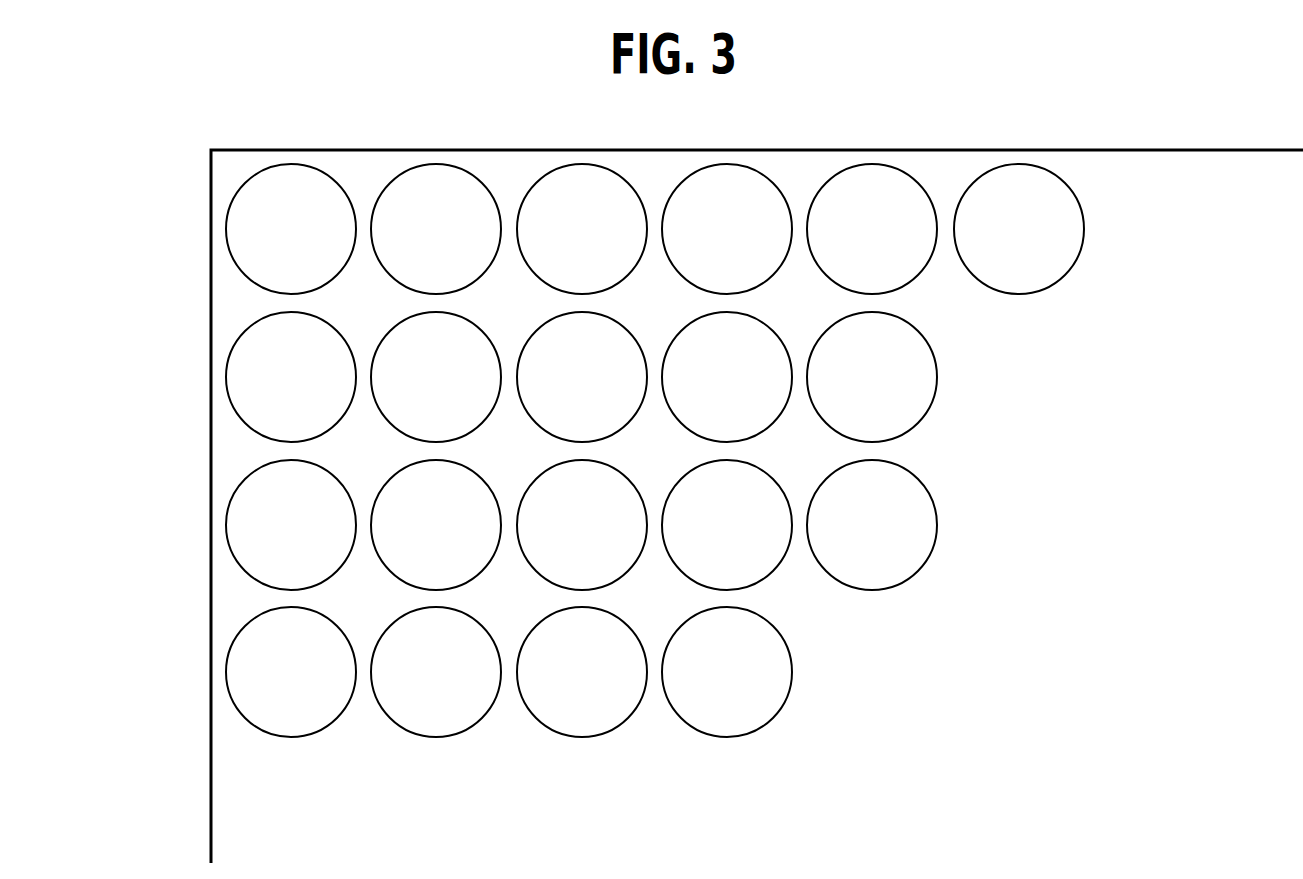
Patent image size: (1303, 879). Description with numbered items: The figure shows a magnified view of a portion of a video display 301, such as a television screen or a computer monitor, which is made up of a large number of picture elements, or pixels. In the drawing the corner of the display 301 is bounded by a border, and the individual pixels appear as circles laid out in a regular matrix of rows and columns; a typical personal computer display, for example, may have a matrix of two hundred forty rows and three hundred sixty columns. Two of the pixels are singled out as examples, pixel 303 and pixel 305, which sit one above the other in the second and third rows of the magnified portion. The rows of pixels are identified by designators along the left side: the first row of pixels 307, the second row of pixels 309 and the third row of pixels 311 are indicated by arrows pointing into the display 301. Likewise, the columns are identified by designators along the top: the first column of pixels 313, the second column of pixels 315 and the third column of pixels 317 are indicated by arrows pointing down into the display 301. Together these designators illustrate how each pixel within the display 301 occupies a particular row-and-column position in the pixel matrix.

The video display 301 is at (1155, 168).
The pixel 303 is at (893, 394).
The pixel 305 is at (893, 542).
The first row of pixels 307 is at (196, 230).
The second row of pixels 309 is at (516, 377).
The third row of pixels 311 is at (516, 525).
The first column of pixels 313 is at (298, 138).
The second column of pixels 315 is at (435, 138).
The third column of pixels 317 is at (573, 138).